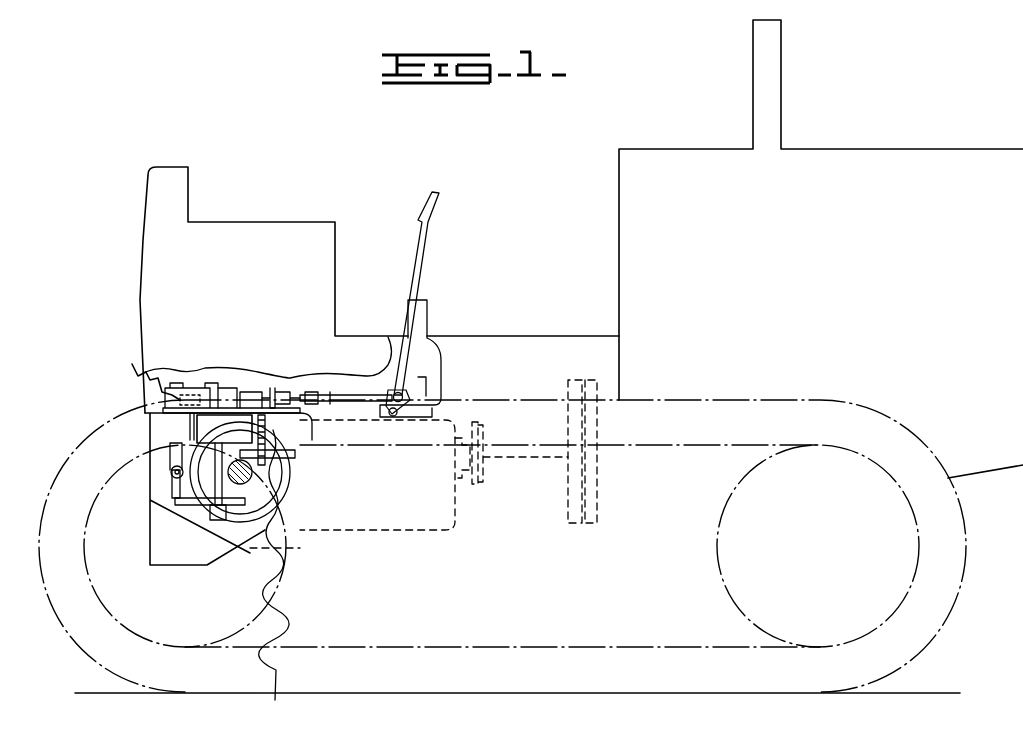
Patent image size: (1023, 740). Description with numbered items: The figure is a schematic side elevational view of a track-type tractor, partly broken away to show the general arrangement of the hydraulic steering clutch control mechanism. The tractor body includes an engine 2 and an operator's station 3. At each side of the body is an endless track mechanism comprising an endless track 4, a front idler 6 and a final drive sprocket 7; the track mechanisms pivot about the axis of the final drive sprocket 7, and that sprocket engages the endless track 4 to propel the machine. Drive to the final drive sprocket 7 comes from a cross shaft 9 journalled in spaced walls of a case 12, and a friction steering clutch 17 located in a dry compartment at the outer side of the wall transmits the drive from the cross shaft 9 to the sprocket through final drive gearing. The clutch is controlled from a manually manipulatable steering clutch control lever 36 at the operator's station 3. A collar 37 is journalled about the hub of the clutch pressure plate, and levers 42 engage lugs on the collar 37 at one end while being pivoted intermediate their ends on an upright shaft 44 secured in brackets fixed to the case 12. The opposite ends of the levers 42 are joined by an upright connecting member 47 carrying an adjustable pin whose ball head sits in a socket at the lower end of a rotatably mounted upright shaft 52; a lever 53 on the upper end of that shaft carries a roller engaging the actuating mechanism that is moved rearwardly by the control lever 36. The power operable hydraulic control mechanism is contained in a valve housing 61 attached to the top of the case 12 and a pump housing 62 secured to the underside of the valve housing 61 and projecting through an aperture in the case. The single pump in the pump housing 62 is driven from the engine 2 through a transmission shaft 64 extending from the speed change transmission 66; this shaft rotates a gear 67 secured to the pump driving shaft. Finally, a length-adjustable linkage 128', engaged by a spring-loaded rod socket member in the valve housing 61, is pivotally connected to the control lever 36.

The engine 2 is at (860, 265).
The operator's station 3 is at (290, 321).
The endless track 4 is at (88, 410).
The front idler 6 is at (718, 572).
The final drive sprocket 7 is at (290, 578).
The cross shaft 9 is at (245, 483).
The case 12 is at (190, 565).
The friction steering clutch 17 is at (272, 440).
The steering clutch control lever 36 is at (437, 250).
The collar 37 is at (275, 472).
The lever 42 is at (175, 452).
The upright shaft 44 is at (222, 495).
The upright connecting member 47 is at (172, 493).
The upright shaft 52 is at (190, 437).
The lever 53 is at (140, 377).
The valve housing 61 is at (227, 392).
The pump housing 62 is at (217, 422).
The transmission shaft 64 is at (295, 454).
The speed change transmission 66 is at (432, 534).
The gear 67 is at (270, 410).
The linkage 128' is at (349, 353).